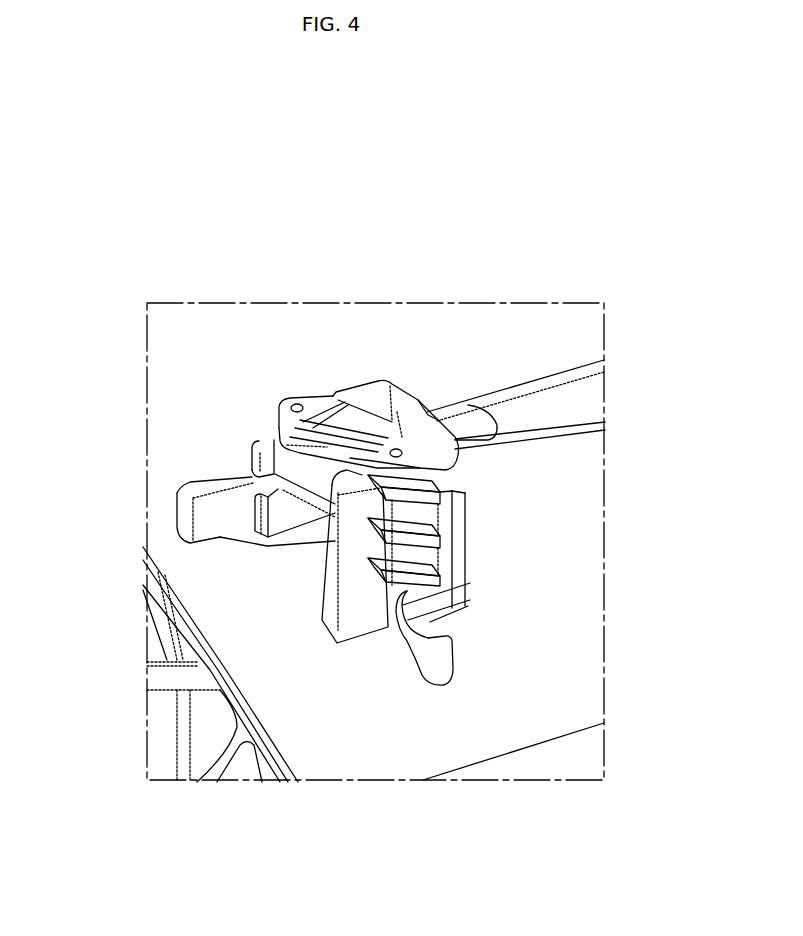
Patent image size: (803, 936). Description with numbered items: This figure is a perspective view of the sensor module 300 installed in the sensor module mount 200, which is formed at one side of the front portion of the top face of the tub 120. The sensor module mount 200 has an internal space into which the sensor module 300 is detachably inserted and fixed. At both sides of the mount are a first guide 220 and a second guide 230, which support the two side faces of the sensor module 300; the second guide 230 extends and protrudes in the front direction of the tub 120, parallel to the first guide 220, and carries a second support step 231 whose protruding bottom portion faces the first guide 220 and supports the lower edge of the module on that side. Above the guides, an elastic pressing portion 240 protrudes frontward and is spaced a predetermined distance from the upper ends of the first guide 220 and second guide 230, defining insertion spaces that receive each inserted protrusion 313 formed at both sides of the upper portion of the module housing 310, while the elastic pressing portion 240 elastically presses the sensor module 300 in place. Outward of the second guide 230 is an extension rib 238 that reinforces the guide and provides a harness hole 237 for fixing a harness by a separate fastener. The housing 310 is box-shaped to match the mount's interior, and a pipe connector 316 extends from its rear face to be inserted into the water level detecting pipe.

The tub 120 is at (590, 585).
The sensor module mount 200 is at (370, 461).
The first guide 220 is at (250, 483).
The second guide 230 is at (357, 588).
The second support step 231 is at (225, 537).
The harness hole 237 is at (452, 570).
The extension rib 238 is at (447, 517).
The elastic pressing portion 240 is at (318, 410).
The sensor module 300 is at (370, 357).
The housing 310 is at (250, 466).
The inserted protrusion 313 is at (279, 418).
The pipe connector 316 is at (463, 425).